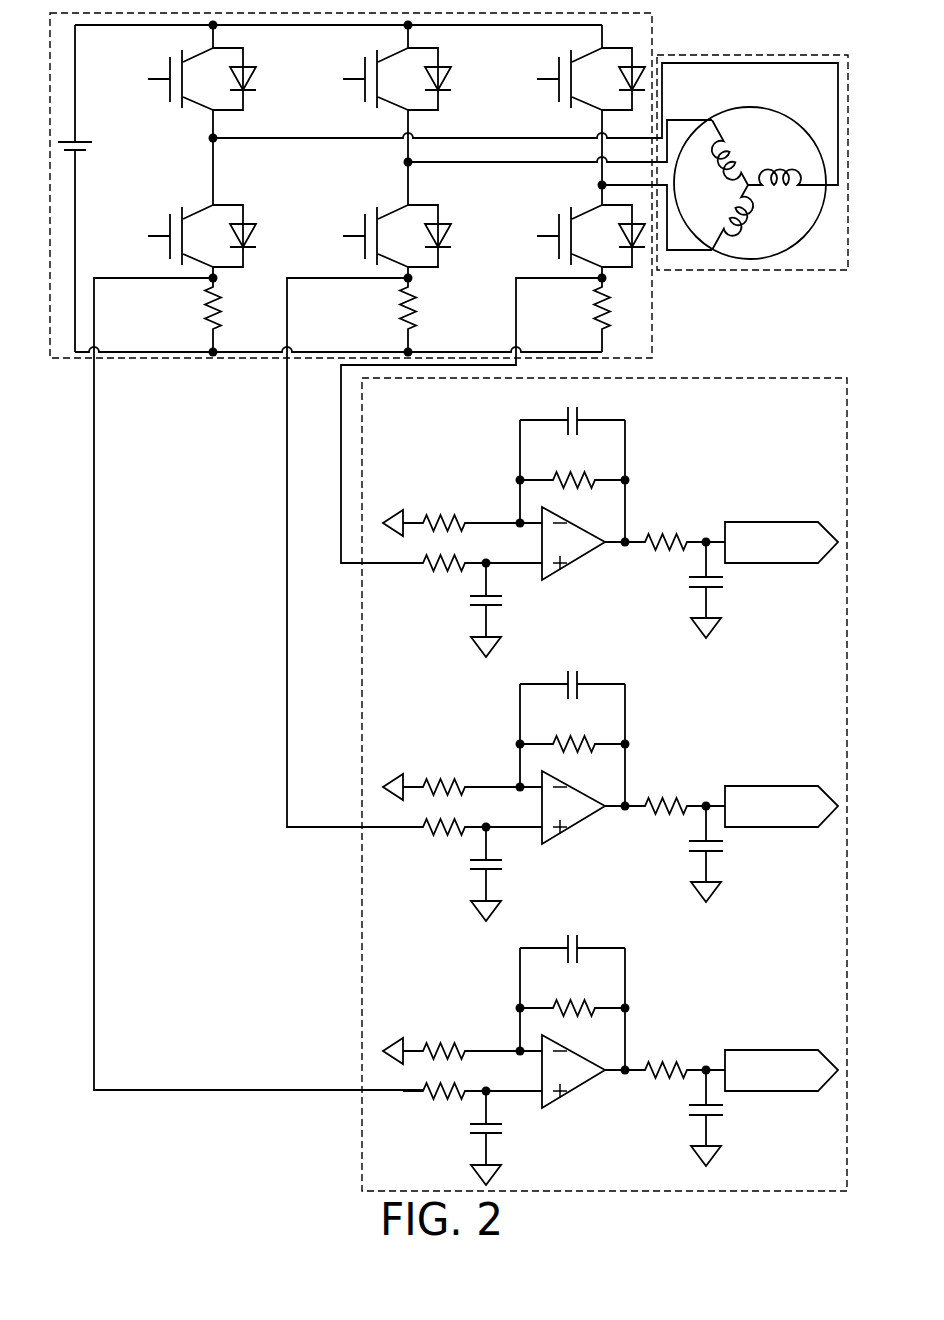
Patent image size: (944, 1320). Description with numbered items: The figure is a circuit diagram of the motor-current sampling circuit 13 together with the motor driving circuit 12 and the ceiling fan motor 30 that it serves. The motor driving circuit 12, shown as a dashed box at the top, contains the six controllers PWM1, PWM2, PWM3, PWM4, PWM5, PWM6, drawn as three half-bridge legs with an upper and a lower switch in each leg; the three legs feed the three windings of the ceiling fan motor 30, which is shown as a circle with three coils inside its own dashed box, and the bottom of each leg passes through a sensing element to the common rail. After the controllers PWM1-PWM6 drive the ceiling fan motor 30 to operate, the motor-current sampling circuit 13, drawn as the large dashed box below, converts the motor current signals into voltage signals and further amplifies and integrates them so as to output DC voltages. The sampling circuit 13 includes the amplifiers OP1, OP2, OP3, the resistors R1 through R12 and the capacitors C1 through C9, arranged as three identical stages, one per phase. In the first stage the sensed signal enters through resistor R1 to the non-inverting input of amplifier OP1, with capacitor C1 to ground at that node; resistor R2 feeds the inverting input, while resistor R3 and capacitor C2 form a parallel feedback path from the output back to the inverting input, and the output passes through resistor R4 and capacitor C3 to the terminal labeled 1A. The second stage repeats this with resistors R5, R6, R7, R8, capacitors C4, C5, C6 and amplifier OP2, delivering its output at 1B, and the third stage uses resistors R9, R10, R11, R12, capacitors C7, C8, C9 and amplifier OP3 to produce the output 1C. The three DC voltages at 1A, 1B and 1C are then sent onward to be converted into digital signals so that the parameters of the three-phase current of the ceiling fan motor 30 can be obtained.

The motor driving circuit 12 is at (653, 31).
The motor-current sampling circuit 13 is at (793, 378).
The ceiling fan motor 30 is at (795, 55).
The controller PWM1 is at (169, 79).
The controller PWM2 is at (364, 79).
The controller PWM3 is at (557, 79).
The controller PWM4 is at (169, 236).
The controller PWM5 is at (364, 236).
The controller PWM6 is at (557, 236).
The resistor R1 is at (472, 575).
The resistor R2 is at (462, 513).
The resistor R3 is at (573, 469).
The resistor R4 is at (665, 530).
The resistor R5 is at (472, 839).
The resistor R6 is at (462, 777).
The resistor R7 is at (573, 733).
The resistor R8 is at (665, 794).
The resistor R9 is at (472, 1103).
The resistor R10 is at (462, 1041).
The resistor R11 is at (573, 997).
The resistor R12 is at (665, 1058).
The capacitor C1 is at (501, 610).
The capacitor C2 is at (572, 408).
The capacitor C3 is at (720, 590).
The capacitor C4 is at (501, 874).
The capacitor C5 is at (572, 672).
The capacitor C6 is at (720, 854).
The capacitor C7 is at (501, 1138).
The capacitor C8 is at (572, 936).
The capacitor C9 is at (720, 1118).
The amplifier OP1 is at (575, 540).
The amplifier OP2 is at (575, 804).
The amplifier OP3 is at (575, 1068).
The phase current sense output 1A is at (781, 542).
The phase current sense output 1B is at (781, 806).
The phase current sense output 1C is at (781, 1070).